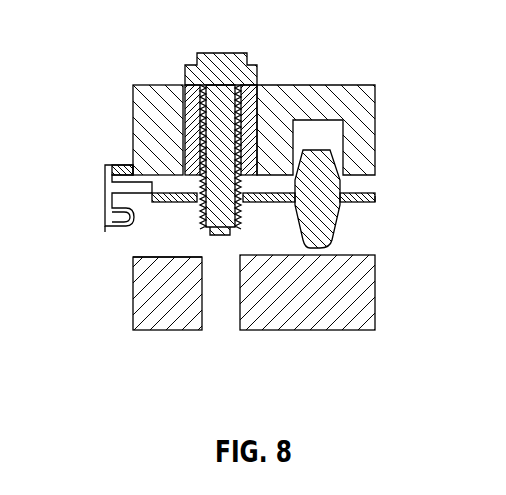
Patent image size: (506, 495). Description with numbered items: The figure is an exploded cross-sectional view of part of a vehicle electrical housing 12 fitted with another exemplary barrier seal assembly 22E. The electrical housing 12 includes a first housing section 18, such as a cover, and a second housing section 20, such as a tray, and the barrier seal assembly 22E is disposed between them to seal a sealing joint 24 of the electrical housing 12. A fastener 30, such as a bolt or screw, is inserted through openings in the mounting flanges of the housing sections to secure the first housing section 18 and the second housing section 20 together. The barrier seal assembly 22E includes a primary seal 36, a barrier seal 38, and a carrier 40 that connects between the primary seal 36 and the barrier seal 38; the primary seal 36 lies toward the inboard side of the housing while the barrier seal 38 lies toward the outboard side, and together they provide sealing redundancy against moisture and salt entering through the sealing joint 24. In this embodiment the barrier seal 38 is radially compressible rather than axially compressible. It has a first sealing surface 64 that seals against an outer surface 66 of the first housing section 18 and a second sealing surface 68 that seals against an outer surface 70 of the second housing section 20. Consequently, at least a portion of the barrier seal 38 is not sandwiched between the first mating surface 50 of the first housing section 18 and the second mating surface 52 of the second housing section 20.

The electrical housing 12 is at (92, 48).
The first housing section 18 is at (275, 112).
The second housing section 20 is at (307, 313).
The barrier seal assembly 22E is at (105, 232).
The sealing joint 24 is at (277, 235).
The fastener 30 is at (218, 93).
The primary seal 36 is at (350, 190).
The barrier seal 38 is at (105, 195).
The carrier 40 is at (372, 199).
The first mating surface 50 is at (133, 163).
The second mating surface 52 is at (150, 257).
The first sealing surface 64 is at (105, 168).
The outer surface 66 is at (133, 110).
The second sealing surface 68 is at (107, 222).
The outer surface 70 is at (133, 290).